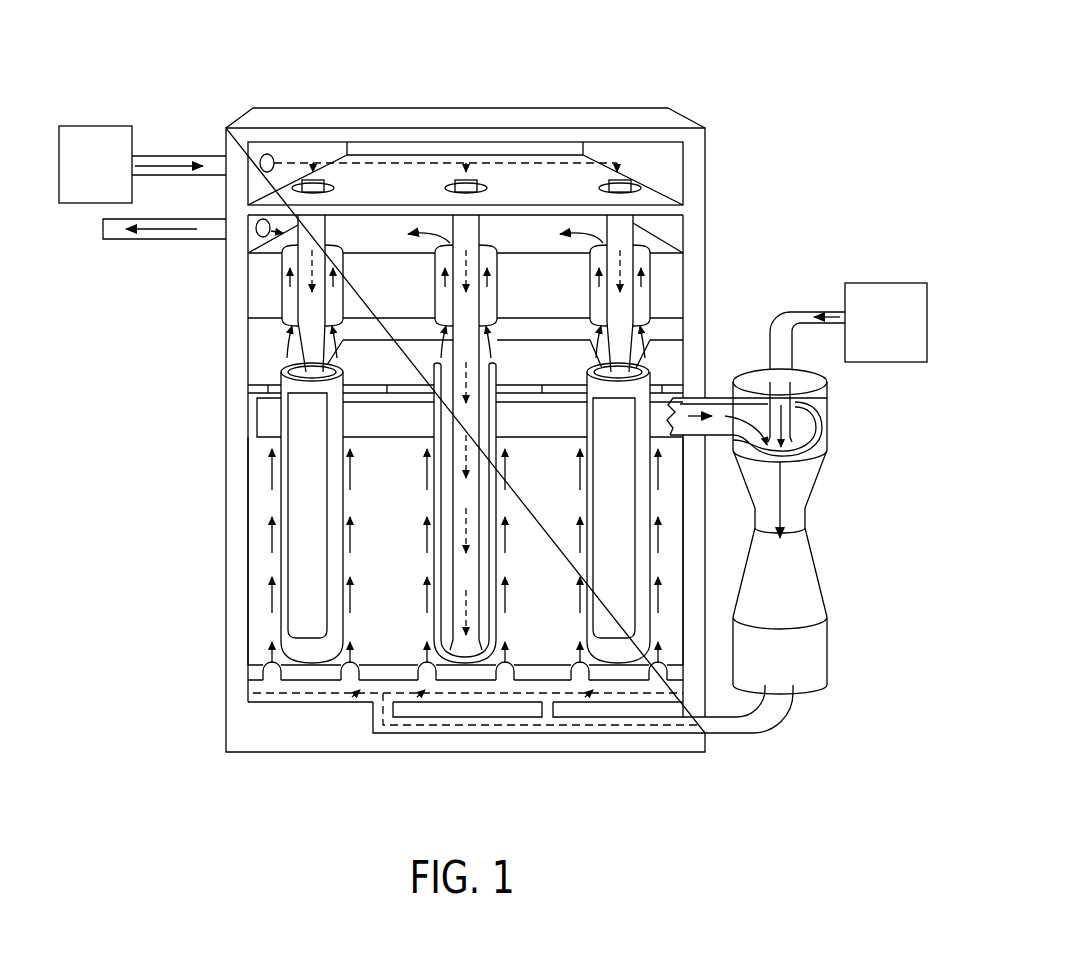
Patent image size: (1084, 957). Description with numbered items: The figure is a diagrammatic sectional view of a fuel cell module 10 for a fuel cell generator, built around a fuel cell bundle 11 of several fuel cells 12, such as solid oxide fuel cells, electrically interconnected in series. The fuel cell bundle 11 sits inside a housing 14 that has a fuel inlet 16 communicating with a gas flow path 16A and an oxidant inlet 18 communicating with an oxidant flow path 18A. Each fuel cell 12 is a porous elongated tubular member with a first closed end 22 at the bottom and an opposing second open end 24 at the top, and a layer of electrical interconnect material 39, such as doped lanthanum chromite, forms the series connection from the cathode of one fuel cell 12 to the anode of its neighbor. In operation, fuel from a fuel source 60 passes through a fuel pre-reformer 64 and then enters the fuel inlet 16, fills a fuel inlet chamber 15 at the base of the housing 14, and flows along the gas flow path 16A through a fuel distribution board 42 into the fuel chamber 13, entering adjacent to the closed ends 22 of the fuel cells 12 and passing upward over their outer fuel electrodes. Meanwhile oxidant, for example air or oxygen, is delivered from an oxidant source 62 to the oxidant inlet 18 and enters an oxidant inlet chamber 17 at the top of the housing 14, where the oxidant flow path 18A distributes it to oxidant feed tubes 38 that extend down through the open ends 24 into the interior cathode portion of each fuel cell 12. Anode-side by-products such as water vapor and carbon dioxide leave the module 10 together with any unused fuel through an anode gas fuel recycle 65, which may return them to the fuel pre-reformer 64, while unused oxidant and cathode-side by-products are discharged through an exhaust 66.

The fuel cell module 10 is at (752, 86).
The fuel cell bundle 11 is at (266, 631).
The fuel cells 12 is at (282, 373).
The fuel chamber 13 is at (253, 556).
The housing 14 is at (615, 122).
The fuel inlet chamber 15 is at (247, 693).
The fuel inlet 16 is at (699, 728).
The gas flow path 16A is at (452, 726).
The oxidant inlet chamber 17 is at (650, 164).
The oxidant inlet 18 is at (270, 154).
The oxidant flow path 18A is at (444, 160).
The first closed end 22 is at (311, 656).
The second open end 24 is at (330, 368).
The oxidant feed tube 38 is at (320, 233).
The electrical interconnect material 39 is at (302, 503).
The fuel distribution board 42 is at (467, 674).
The fuel source 60 is at (873, 336).
The oxidant source 62 is at (84, 176).
The fuel pre-reformer 64 is at (803, 573).
The anode gas fuel recycle 65 is at (716, 398).
The exhaust 66 is at (165, 240).